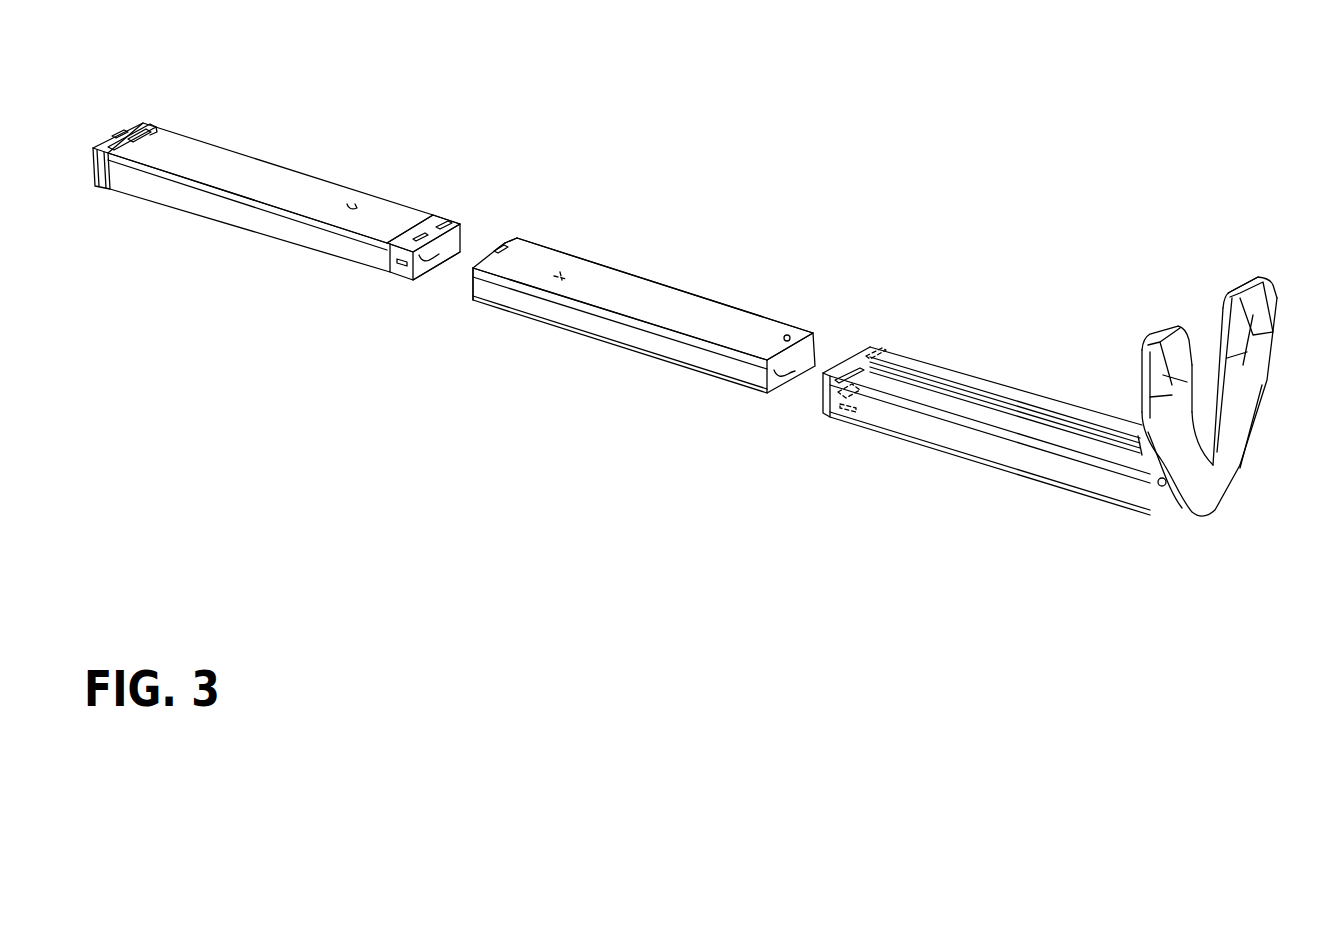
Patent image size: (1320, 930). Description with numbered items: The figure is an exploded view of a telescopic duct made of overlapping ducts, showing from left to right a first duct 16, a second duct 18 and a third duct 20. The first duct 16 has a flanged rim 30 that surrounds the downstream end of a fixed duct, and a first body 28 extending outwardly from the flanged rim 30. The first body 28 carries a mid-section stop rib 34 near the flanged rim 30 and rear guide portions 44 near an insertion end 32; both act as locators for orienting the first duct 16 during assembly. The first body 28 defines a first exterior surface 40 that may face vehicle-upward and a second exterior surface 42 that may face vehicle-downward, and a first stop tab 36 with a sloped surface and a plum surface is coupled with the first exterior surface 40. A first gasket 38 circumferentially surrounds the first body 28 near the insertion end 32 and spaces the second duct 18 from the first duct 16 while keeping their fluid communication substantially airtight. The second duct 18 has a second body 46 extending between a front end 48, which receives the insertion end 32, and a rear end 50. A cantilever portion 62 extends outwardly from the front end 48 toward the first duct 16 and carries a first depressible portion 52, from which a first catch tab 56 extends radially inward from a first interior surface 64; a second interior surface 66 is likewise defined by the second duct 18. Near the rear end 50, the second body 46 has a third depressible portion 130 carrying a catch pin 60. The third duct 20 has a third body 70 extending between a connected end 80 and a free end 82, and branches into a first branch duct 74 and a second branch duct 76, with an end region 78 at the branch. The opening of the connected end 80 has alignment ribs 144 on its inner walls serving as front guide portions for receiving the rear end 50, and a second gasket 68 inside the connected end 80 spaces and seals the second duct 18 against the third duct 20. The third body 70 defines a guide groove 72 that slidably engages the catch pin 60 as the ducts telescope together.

The first duct 16 is at (288, 220).
The second duct 18 is at (672, 317).
The third duct 20 is at (1069, 394).
The first body 28 is at (217, 160).
The flanged rim 30 is at (152, 120).
The insertion end 32 is at (458, 233).
The mid-section stop rib 34 is at (168, 135).
The first stop tab 36 is at (354, 200).
The first gasket 38 is at (433, 213).
The first exterior surface 40 is at (246, 193).
The second exterior surface 42 is at (437, 262).
The rear guide portion 44 is at (408, 248).
The second body 46 is at (660, 300).
The front end 48 is at (518, 240).
The rear end 50 is at (815, 328).
The first depressible portion 52 is at (500, 257).
The first catch tab 56 is at (497, 248).
The catch pin 60 is at (781, 334).
The cantilever portion 62 is at (482, 253).
The first interior surface 64 is at (560, 276).
The second interior surface 66 is at (783, 370).
The second gasket 68 is at (880, 372).
The third body 70 is at (922, 368).
The guide groove 72 is at (1150, 482).
The first branch duct 74 is at (1190, 445).
The second branch duct 76 is at (1248, 408).
The prong tip 78 is at (1270, 290).
The connected end 80 is at (847, 360).
The free end 82 is at (1220, 310).
The third depressible portion 130 is at (760, 340).
The alignment ribs 144 is at (862, 345).